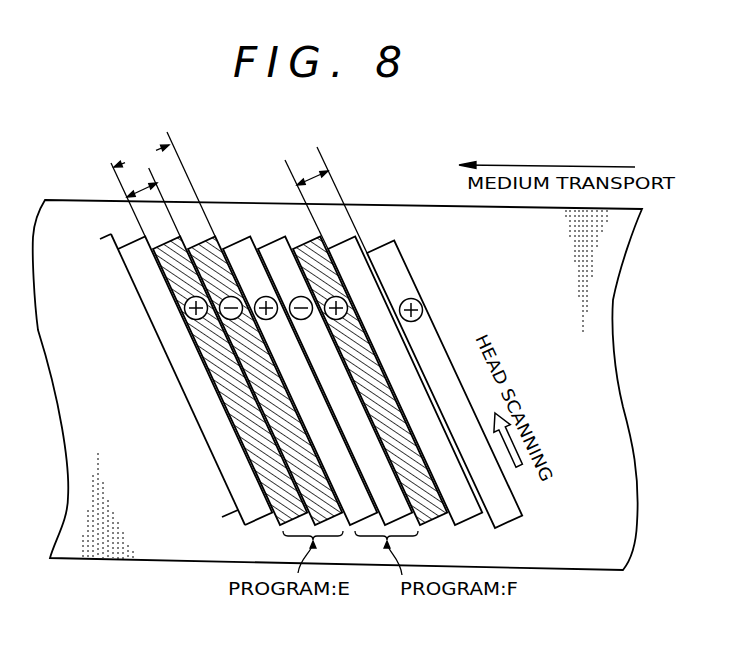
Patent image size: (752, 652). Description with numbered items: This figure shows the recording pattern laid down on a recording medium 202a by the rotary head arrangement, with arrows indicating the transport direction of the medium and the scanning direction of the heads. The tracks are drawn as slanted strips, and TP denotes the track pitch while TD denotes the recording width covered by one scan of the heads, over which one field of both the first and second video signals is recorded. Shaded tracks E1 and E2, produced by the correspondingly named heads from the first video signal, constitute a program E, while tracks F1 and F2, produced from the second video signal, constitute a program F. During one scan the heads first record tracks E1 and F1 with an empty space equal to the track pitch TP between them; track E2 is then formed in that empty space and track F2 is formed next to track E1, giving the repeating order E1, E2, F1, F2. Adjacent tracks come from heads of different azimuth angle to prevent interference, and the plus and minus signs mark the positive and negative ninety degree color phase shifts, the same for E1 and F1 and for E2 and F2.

The recording medium 202a is at (365, 207).
The track formed by head E1 is at (300, 381).
The track formed by head E2 is at (265, 381).
The track formed by head F1 is at (300, 381).
The track formed by head F2 is at (370, 381).
The recording width TD is at (163, 184).
The track pitch TP is at (246, 200).